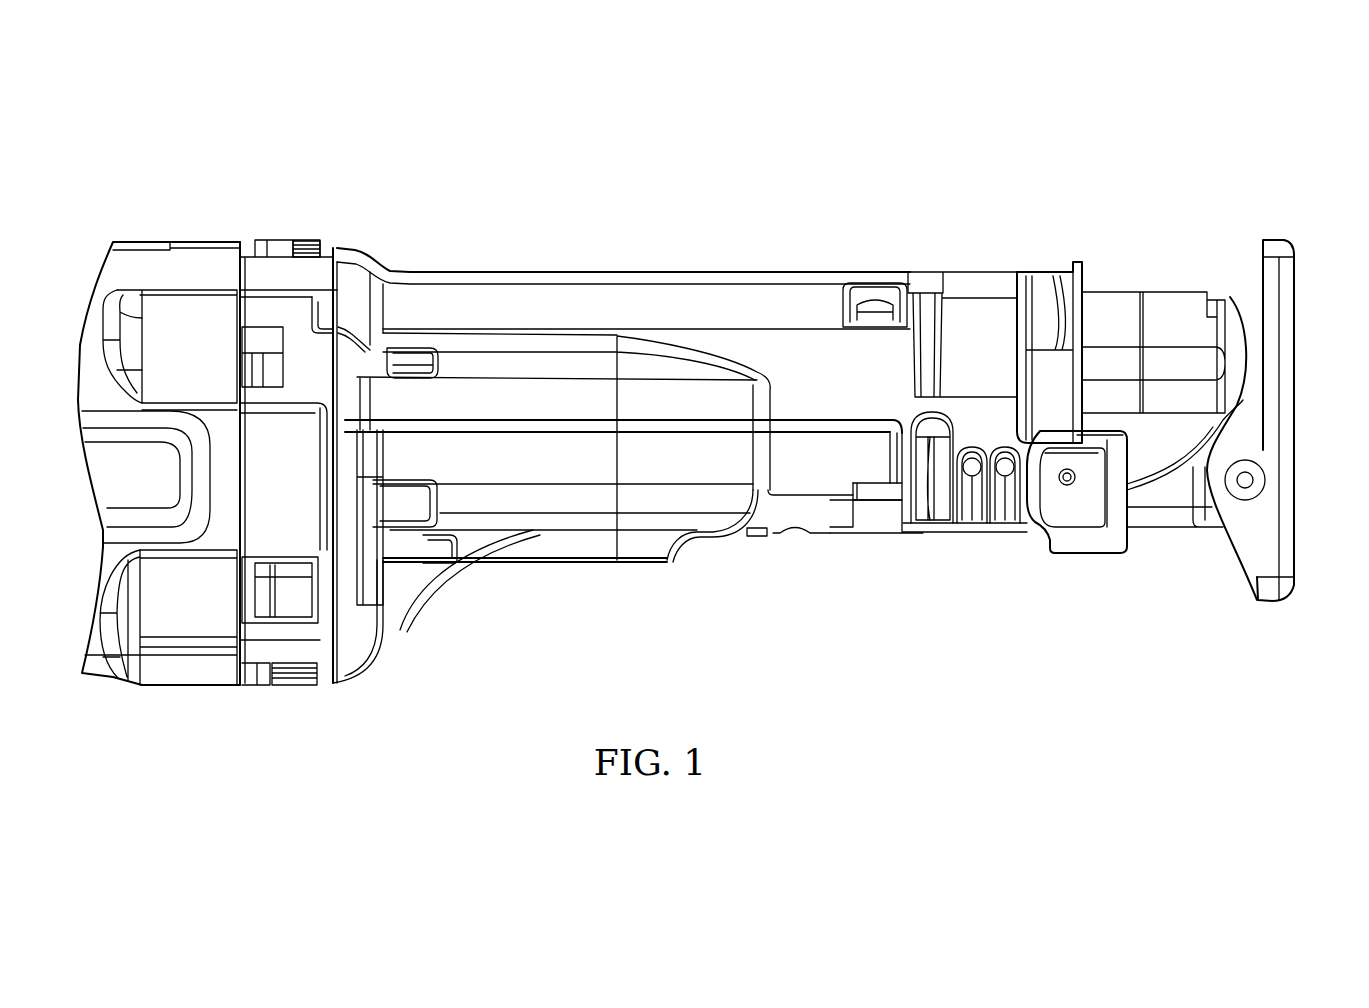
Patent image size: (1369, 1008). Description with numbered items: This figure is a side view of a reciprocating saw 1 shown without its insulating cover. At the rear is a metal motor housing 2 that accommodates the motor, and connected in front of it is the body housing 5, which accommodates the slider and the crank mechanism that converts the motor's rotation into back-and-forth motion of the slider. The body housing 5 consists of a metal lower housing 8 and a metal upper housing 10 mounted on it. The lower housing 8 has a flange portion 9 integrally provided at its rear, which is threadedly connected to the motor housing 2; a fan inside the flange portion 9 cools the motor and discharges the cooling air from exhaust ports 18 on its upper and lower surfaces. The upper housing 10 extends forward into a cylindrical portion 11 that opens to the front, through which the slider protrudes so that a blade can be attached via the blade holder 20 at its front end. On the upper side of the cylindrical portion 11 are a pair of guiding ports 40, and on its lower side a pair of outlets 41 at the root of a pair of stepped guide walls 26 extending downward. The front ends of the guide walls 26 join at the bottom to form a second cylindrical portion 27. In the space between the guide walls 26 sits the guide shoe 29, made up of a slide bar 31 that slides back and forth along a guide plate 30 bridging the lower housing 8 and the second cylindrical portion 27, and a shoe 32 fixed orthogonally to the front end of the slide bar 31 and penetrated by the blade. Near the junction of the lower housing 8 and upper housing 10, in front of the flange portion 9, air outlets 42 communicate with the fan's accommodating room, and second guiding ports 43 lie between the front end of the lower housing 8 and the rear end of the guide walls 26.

The reciprocating saw 1 is at (996, 190).
The motor housing 2 is at (128, 255).
The body housing 5 is at (676, 270).
The lower housing 8 is at (580, 507).
The flange portion 9 is at (252, 257).
The upper housing 10 is at (762, 305).
The cylindrical portion 11 is at (1043, 285).
The exhaust ports 18 is at (315, 240).
The blade holder 20 is at (1178, 306).
The guide walls 26 is at (973, 513).
The second cylindrical portion 27 is at (1085, 547).
The guide shoe 29 is at (1182, 531).
The guide plate 30 is at (930, 530).
The slide bar 31 is at (1143, 520).
The shoe 32 is at (1273, 407).
The guiding ports 40 is at (928, 283).
The outlets 41 is at (910, 480).
The air outlets 42 is at (388, 585).
The second guiding ports 43 is at (884, 478).